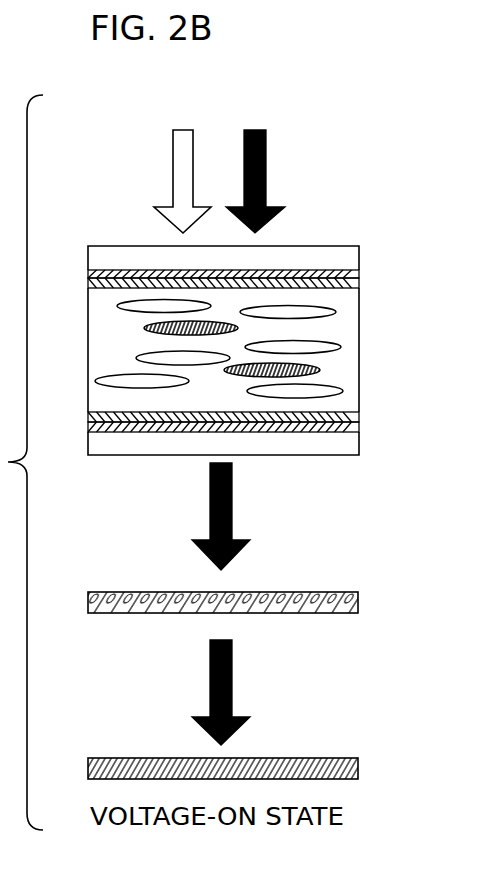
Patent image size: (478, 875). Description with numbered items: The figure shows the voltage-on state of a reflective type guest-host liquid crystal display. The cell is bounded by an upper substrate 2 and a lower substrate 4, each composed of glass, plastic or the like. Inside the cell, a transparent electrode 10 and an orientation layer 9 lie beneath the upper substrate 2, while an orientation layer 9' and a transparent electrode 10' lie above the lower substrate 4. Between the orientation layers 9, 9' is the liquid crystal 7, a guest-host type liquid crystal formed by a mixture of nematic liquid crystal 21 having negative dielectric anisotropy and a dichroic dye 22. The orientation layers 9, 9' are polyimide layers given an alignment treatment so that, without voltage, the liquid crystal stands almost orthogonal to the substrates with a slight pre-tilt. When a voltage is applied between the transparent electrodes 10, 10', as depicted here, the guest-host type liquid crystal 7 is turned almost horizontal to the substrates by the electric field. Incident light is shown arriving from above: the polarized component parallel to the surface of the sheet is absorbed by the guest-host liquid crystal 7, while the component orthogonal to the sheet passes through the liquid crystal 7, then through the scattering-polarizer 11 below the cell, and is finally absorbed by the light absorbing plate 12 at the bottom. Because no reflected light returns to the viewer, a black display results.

The substrate 2 is at (356, 256).
The transparent electrode 10 is at (264, 270).
The orientation layer 9 is at (243, 285).
The liquid crystal 7 is at (357, 356).
The dichroic dye 22 is at (150, 328).
The nematic liquid crystal 21 is at (100, 381).
The orientation layer 9' is at (247, 416).
The transparent electrode 10' is at (266, 434).
The substrate 4 is at (357, 445).
The scattering-polarizer 11 is at (357, 600).
The light absorbing plate 12 is at (357, 768).